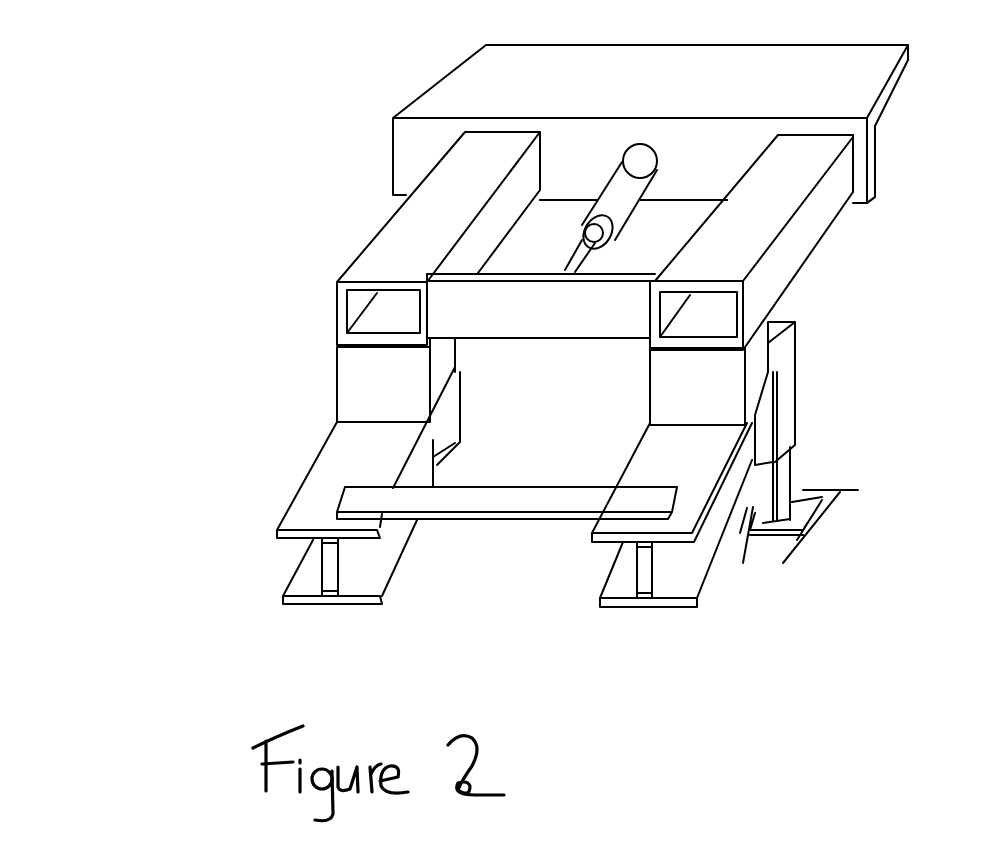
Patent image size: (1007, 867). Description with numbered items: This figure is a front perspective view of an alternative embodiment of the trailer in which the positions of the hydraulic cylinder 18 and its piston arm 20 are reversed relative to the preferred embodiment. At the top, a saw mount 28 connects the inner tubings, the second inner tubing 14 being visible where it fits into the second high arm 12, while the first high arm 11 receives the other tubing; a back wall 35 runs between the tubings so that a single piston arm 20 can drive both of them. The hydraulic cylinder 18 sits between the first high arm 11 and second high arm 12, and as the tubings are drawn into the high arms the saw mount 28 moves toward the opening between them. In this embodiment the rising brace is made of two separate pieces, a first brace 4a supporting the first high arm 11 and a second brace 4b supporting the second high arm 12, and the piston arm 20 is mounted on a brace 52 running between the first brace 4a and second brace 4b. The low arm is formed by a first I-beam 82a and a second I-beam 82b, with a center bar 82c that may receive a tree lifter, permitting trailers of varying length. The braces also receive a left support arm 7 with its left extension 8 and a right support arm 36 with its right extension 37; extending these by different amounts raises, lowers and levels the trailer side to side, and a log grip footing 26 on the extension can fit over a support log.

The saw mount 28 is at (650, 91).
The second inner tubing 14 is at (903, 90).
The back wall 35 is at (737, 152).
The first high arm 11 is at (438, 238).
The second high arm 12 is at (751, 242).
The hydraulic cylinder 18 is at (635, 182).
The piston arm 20 is at (585, 258).
The brace 52 is at (541, 306).
The first brace 4a is at (383, 380).
The second brace 4b is at (697, 381).
The right support arm 36 is at (460, 397).
The right extension 37 is at (433, 473).
The first I-beam 82a is at (335, 430).
The second I-beam 82b is at (655, 447).
The center bar 82c is at (463, 505).
The left support arm 7 is at (788, 368).
The left extension 8 is at (786, 478).
The log grip footing 26 is at (825, 490).